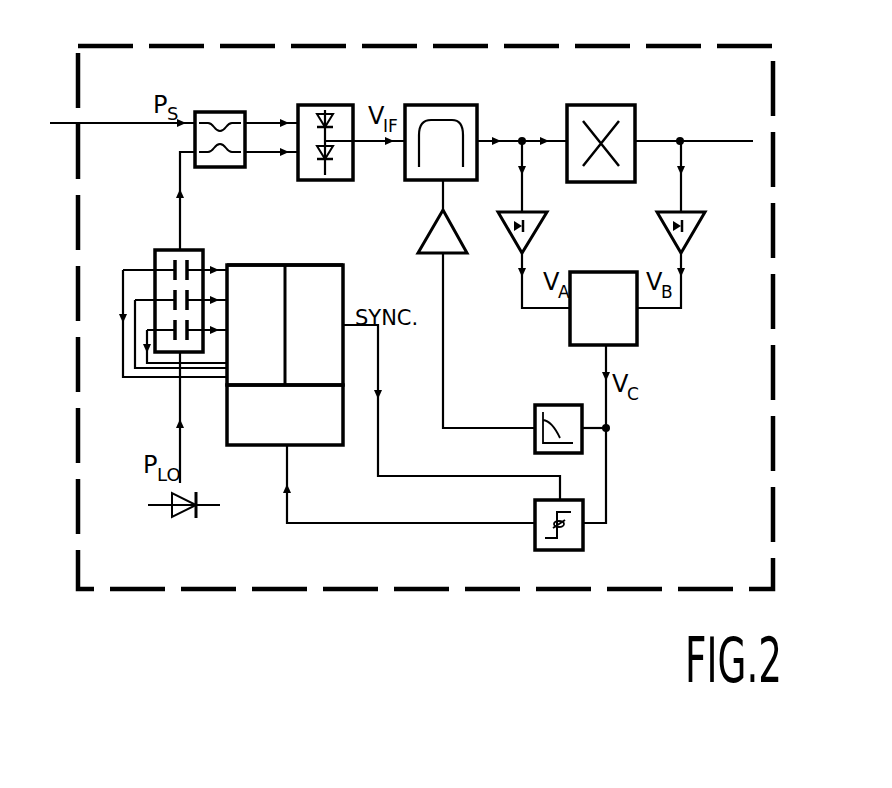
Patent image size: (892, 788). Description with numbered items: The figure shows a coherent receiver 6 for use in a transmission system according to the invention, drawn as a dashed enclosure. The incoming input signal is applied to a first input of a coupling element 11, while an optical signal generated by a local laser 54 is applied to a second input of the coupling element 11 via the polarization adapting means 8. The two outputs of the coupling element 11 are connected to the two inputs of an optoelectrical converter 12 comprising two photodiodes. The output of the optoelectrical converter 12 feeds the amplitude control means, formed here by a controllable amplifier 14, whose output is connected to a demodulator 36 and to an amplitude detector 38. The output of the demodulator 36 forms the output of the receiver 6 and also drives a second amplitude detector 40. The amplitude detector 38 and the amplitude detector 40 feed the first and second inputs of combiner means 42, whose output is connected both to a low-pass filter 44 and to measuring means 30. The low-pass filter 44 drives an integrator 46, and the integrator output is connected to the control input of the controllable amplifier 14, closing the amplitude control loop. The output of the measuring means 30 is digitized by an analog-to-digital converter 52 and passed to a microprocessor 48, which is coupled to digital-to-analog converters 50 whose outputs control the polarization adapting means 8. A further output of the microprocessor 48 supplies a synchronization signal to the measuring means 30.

The receiver 6 is at (160, 46).
The polarization adapting means 8 is at (172, 250).
The coupling element 11 is at (222, 113).
The optoelectrical converter 12 is at (332, 106).
The controllable amplifier 14 is at (448, 106).
The measuring means 30 is at (571, 500).
The demodulator 36 is at (621, 118).
The amplitude detector 38 is at (547, 228).
The amplitude detector 40 is at (696, 228).
The combiner means 42 is at (637, 322).
The low-pass filter 44 is at (558, 400).
The integrator 46 is at (432, 230).
The microprocessor 48 is at (350, 268).
The digital-to-analog converters 50 is at (264, 264).
The analog-to-digital converter 52 is at (343, 398).
The local laser 54 is at (206, 480).